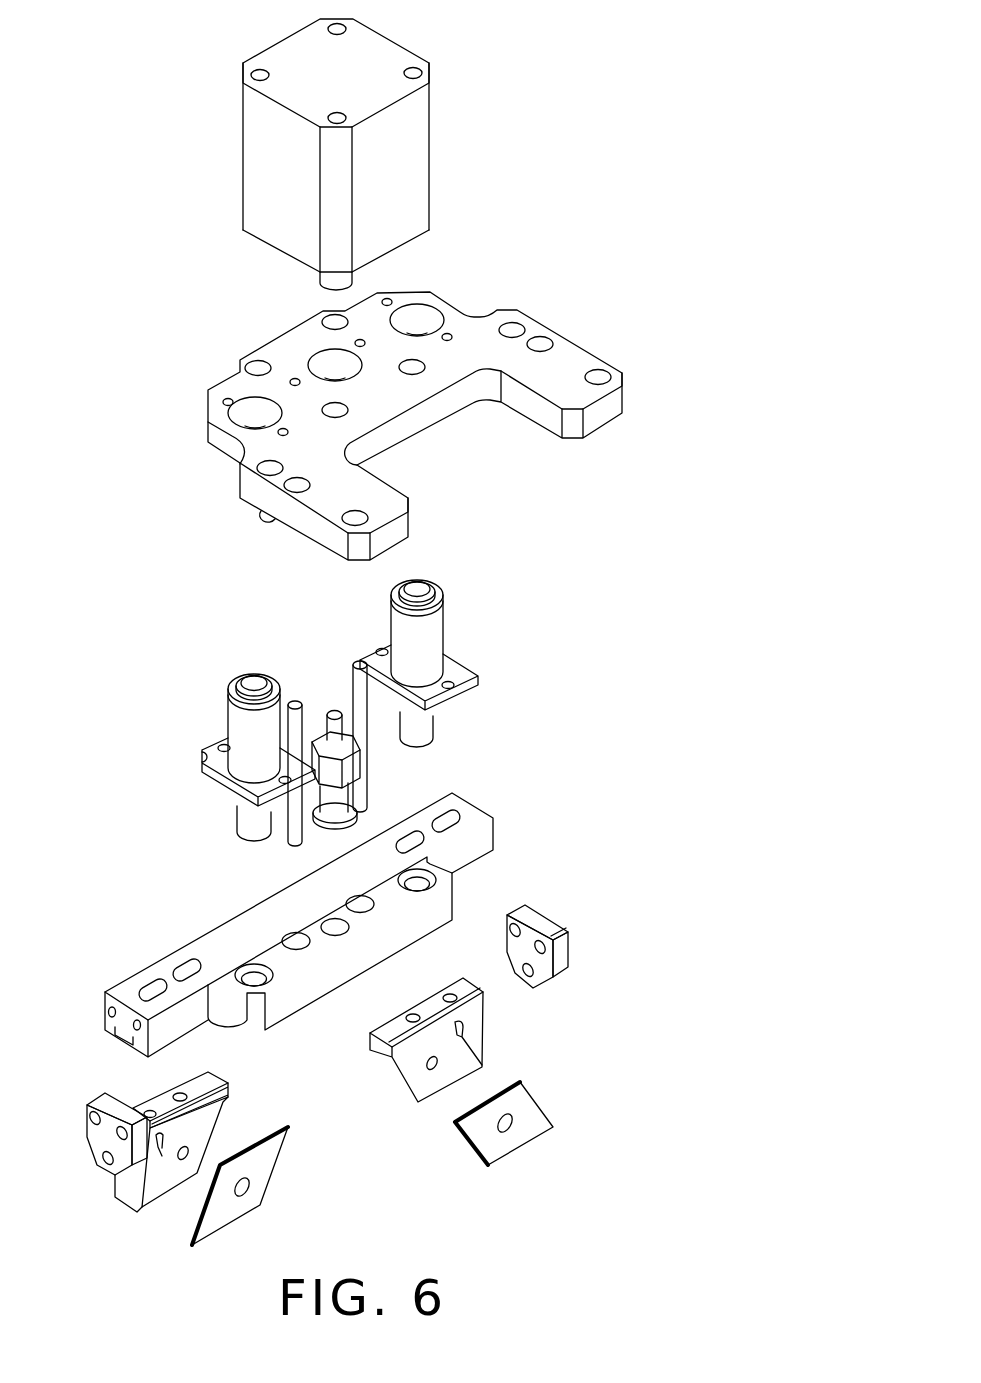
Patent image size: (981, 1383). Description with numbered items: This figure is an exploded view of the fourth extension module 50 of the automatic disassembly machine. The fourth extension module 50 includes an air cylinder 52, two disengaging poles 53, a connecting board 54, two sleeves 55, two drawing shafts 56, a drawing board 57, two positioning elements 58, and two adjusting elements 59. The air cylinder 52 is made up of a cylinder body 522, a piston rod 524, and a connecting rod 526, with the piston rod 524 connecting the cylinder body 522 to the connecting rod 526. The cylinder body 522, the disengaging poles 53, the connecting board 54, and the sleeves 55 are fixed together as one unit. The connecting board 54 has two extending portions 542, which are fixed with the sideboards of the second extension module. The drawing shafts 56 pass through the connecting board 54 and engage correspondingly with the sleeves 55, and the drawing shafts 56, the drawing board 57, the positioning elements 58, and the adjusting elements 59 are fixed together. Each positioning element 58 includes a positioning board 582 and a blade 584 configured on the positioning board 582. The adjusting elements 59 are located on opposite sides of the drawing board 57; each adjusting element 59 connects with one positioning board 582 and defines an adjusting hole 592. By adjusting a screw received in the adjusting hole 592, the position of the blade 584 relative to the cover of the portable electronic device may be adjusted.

The fourth extension module 50 is at (539, 33).
The air cylinder 52 is at (215, 124).
The cylinder body 522 is at (393, 183).
The piston rod 524 is at (347, 277).
The connecting board 54 is at (198, 349).
The extending portions 542 is at (570, 373).
The connecting rod 526 is at (340, 718).
The disengaging poles 53 is at (302, 708).
The sleeves 55 is at (258, 732).
The drawing shafts 56 is at (257, 822).
The drawing board 57 is at (242, 940).
The positioning elements 58 is at (483, 1205).
The positioning board 582 is at (393, 1078).
The blade 584 is at (473, 1132).
The adjusting elements 59 is at (571, 899).
The adjusting hole 592 is at (528, 970).